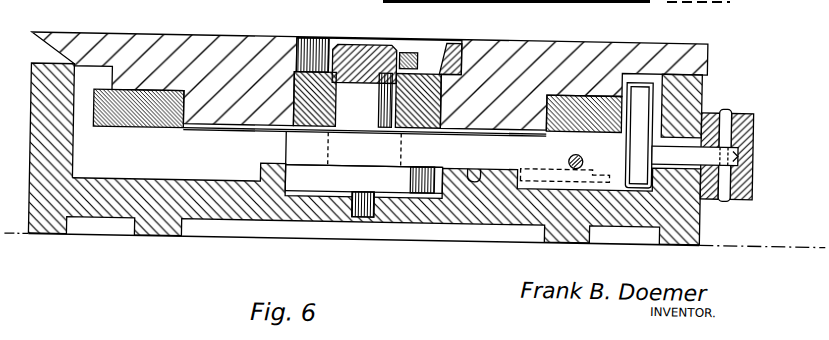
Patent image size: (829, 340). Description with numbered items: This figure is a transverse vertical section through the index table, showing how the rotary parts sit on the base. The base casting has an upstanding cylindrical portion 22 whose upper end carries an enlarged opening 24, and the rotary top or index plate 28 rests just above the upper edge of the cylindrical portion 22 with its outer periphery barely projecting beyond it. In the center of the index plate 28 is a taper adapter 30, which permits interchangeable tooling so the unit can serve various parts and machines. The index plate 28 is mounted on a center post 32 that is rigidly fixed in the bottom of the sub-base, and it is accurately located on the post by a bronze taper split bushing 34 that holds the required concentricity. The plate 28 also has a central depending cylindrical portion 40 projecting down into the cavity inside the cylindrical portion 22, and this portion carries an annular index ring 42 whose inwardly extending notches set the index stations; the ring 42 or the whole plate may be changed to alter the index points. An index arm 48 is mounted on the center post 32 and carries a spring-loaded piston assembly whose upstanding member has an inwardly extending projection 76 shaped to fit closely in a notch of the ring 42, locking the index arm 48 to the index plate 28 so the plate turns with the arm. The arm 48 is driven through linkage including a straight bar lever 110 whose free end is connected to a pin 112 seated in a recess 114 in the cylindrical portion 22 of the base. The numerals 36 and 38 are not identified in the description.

The cylindrical portion 22 is at (50, 111).
The enlarged opening 24 is at (76, 141).
The index plate 28 is at (545, 44).
The taper adapter 30 is at (450, 48).
The center post 32 is at (367, 54).
The bronze taper split bushing 34 is at (324, 77).
The disc 36 is at (437, 151).
The base 38 is at (248, 197).
The depending cylindrical portion 40 is at (511, 107).
The index ring 42 is at (159, 113).
The index arm 48 is at (513, 170).
The projection 76 is at (629, 76).
The bar lever 110 is at (696, 136).
The pin 112 is at (727, 100).
The recess 114 is at (754, 130).